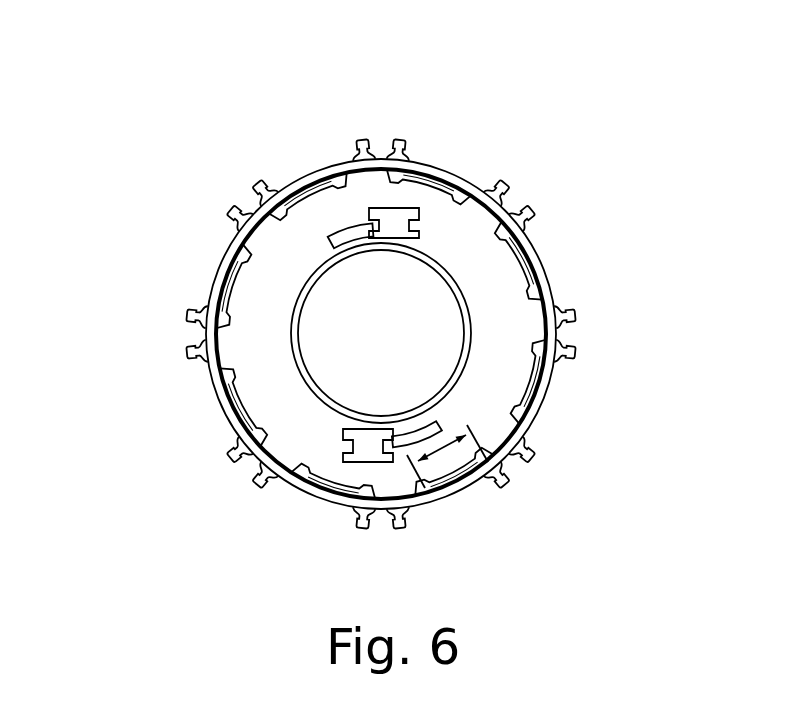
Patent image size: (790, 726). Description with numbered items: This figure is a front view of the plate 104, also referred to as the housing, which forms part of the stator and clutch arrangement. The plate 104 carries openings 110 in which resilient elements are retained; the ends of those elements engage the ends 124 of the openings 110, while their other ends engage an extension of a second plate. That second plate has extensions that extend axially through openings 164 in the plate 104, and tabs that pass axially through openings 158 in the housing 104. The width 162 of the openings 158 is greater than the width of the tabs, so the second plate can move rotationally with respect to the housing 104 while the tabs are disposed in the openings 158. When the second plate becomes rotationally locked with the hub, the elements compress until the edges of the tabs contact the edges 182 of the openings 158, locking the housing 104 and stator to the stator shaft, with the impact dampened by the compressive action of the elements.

The plate 104 is at (462, 163).
The openings 110 is at (396, 220).
The ends of the openings 124 is at (345, 447).
The openings 158 is at (540, 400).
The width of openings 162 is at (467, 475).
The openings 164 is at (334, 232).
The edges of openings 182 is at (207, 340).